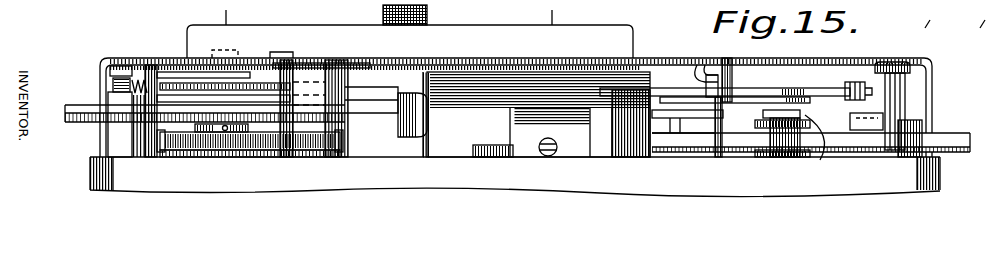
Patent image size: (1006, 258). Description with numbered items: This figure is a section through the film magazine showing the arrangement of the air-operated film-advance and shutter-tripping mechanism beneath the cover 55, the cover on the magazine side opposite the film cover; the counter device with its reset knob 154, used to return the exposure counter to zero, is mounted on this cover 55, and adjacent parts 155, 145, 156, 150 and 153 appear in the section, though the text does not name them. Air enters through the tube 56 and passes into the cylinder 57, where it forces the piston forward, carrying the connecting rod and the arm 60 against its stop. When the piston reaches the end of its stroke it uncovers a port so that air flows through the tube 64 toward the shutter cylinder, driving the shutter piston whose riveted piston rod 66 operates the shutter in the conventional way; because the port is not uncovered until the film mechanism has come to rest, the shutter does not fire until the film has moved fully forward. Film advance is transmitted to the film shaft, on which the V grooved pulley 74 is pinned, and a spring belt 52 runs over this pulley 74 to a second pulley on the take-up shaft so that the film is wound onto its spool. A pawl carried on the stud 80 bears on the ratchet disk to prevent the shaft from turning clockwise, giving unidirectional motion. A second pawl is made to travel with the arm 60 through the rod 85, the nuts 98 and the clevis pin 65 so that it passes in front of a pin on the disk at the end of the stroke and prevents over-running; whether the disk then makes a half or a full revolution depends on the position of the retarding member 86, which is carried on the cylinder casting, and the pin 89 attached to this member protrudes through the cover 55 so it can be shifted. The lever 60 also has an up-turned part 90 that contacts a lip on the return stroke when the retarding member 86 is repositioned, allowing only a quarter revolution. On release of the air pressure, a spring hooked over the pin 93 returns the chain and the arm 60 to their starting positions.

The cover 55 is at (859, 59).
The lid 155 is at (305, 37).
The reset knob 154 is at (427, 8).
The bracket 145 is at (225, 12).
The cover portion 156 is at (550, 12).
The frame member 150 is at (930, 14).
The frame member 153 is at (988, 14).
The tube 64 is at (80, 105).
The stud 80 is at (132, 138).
The V grooved pulley 74 is at (207, 127).
The spring belt 52 is at (273, 133).
The cylinder 57 is at (467, 122).
The up-turned part 90 is at (722, 120).
The pin 89 is at (729, 60).
The clevis pin 65 is at (708, 80).
The rod 85 is at (800, 91).
The nuts 98 is at (853, 100).
The retarding member 86 is at (777, 100).
The arm 60 is at (760, 122).
The piston rod 66 is at (820, 160).
The pin 93 is at (900, 97).
The tube 56 is at (953, 138).